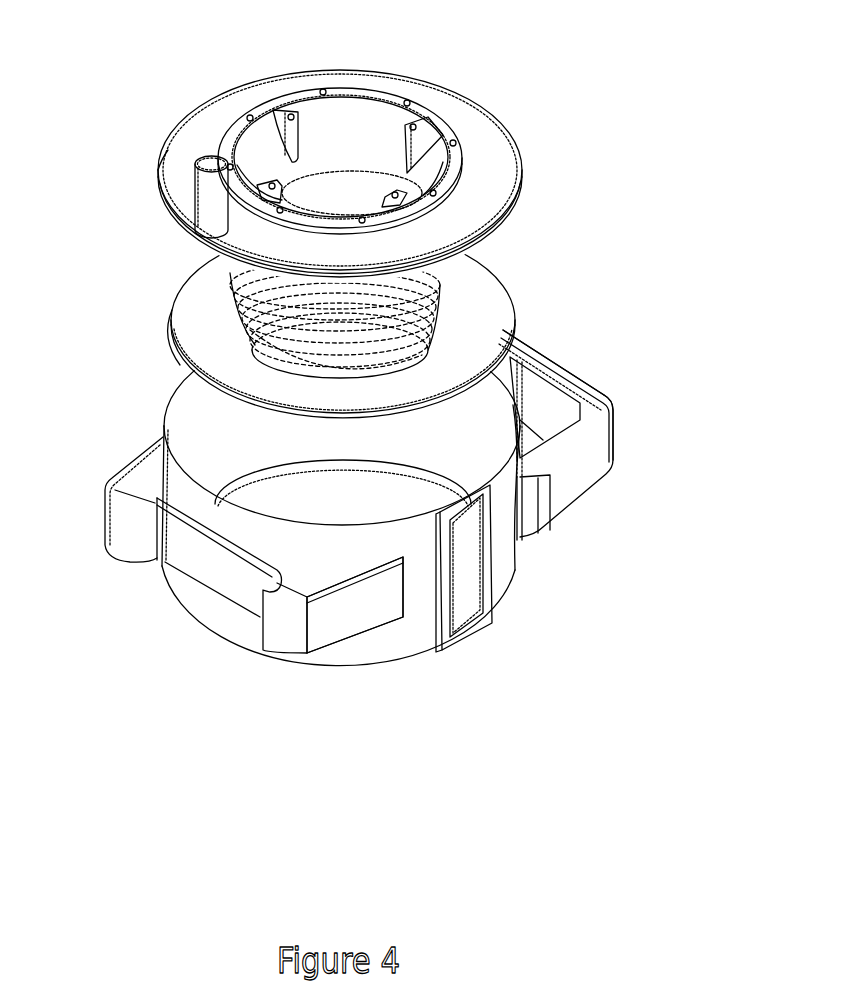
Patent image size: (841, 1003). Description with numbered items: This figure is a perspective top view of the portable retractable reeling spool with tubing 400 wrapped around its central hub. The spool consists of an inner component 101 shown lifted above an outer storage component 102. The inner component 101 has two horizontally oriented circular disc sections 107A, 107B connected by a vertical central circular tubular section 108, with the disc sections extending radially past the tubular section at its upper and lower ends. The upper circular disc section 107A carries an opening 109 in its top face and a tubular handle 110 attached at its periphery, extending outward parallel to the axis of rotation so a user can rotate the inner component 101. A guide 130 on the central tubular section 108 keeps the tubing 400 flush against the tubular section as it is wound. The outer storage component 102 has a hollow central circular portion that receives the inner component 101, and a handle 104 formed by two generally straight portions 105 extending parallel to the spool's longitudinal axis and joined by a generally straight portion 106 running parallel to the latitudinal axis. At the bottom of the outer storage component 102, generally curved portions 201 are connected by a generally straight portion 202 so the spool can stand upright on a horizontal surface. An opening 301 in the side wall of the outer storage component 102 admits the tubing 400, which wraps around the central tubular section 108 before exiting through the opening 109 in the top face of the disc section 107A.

The inner component 101 is at (167, 120).
The outer storage component 102 is at (375, 725).
The handle 104 is at (590, 380).
The portions 105 is at (583, 500).
The portion 106 is at (543, 343).
The circular disc section 107A is at (487, 110).
The circular disc section 107B is at (171, 313).
The circular tubular section 108 is at (470, 293).
The opening 109 is at (340, 143).
The tubular handle 110 is at (190, 195).
The guide 130 is at (362, 283).
The portions 201 is at (367, 630).
The portion 202 is at (197, 623).
The opening 301 is at (483, 630).
The tubing 400 is at (240, 310).